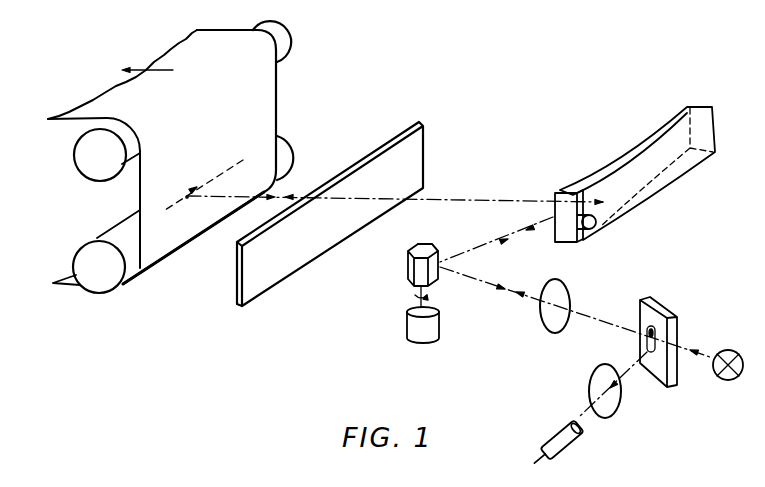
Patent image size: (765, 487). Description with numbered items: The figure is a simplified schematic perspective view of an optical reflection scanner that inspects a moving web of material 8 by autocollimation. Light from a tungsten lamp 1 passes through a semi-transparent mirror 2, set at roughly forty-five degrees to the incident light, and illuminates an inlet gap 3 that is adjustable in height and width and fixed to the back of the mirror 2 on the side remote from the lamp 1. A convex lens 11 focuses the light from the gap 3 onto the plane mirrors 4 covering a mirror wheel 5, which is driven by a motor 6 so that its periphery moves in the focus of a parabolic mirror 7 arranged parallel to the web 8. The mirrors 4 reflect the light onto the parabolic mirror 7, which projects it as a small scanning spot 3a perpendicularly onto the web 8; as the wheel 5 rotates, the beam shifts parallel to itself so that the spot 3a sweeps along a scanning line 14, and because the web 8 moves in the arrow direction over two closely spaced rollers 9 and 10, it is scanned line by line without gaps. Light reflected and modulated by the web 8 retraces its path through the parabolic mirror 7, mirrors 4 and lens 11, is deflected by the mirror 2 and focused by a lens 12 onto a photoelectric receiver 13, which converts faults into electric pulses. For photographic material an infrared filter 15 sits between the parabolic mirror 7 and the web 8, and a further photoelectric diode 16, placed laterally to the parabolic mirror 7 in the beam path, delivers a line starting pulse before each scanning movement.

The tungsten lamp 1 is at (728, 381).
The semi-transparent mirror 2 is at (668, 314).
The inlet gap 3 is at (652, 353).
The scanning spot 3a is at (187, 198).
The plane mirrors 4 is at (412, 279).
The mirror wheel 5 is at (438, 244).
The motor 6 is at (407, 326).
The parabolic mirror 7 is at (667, 123).
The web of material 8 is at (202, 45).
The roller 9 is at (286, 43).
The roller 10 is at (281, 144).
The convex lens 11 is at (552, 320).
The lens 12 is at (607, 418).
The photoelectric receiver 13 is at (565, 450).
The scanning line 14 is at (231, 170).
The infrared filter 15 is at (265, 277).
The photoelectric diode 16 is at (588, 238).